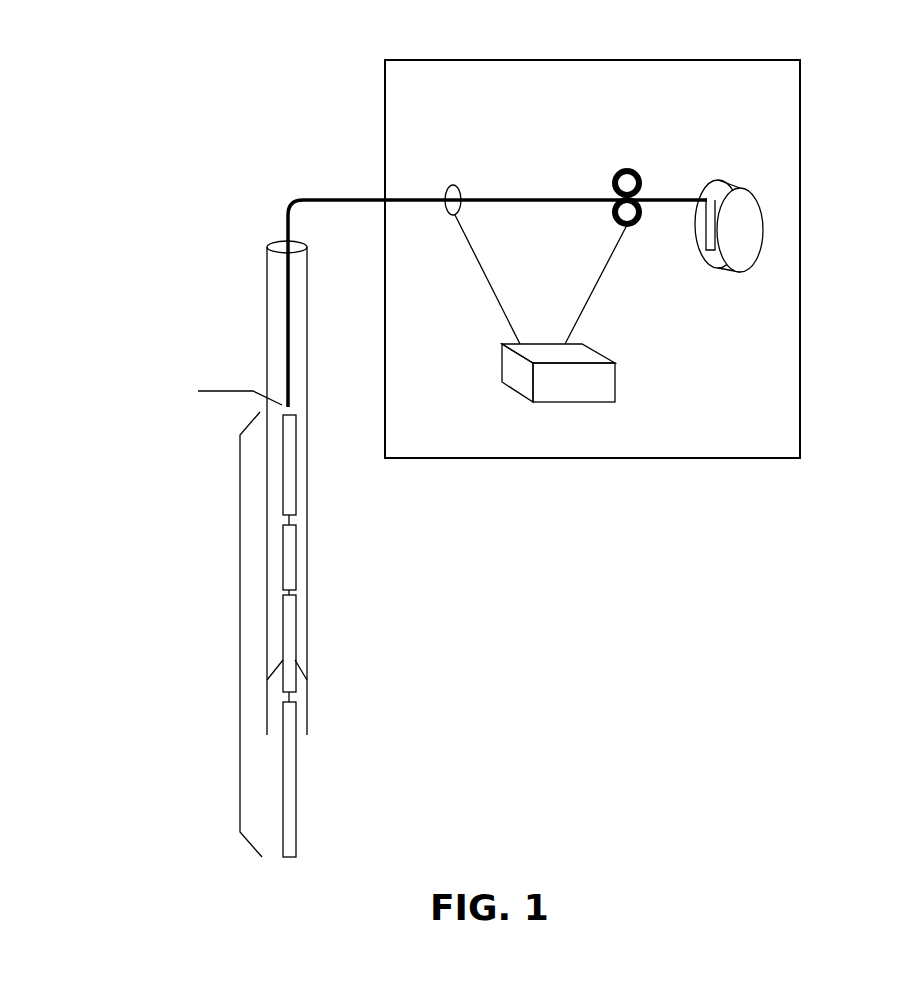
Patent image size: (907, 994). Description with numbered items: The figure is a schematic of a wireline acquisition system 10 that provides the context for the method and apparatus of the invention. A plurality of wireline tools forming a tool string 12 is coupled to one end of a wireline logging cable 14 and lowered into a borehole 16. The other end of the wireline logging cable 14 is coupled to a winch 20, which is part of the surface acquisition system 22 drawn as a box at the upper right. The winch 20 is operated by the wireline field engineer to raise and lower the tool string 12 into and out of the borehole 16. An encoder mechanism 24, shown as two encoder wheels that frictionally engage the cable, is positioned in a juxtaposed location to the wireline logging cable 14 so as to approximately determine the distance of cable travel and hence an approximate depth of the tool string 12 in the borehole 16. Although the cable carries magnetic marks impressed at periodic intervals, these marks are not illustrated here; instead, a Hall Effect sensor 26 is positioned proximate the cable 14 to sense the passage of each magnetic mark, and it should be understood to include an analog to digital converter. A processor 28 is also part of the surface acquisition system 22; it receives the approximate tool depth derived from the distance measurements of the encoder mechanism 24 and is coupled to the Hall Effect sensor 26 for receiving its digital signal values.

The wireline acquisition system 10 is at (556, 574).
The tool string 12 is at (240, 624).
The wireline logging cable 14 is at (280, 210).
The borehole 16 is at (262, 300).
The winch 20 is at (716, 180).
The surface acquisition system 22 is at (800, 258).
The encoder mechanism 24 is at (630, 170).
The Hall Effect sensor 26 is at (458, 183).
The processor 28 is at (615, 385).